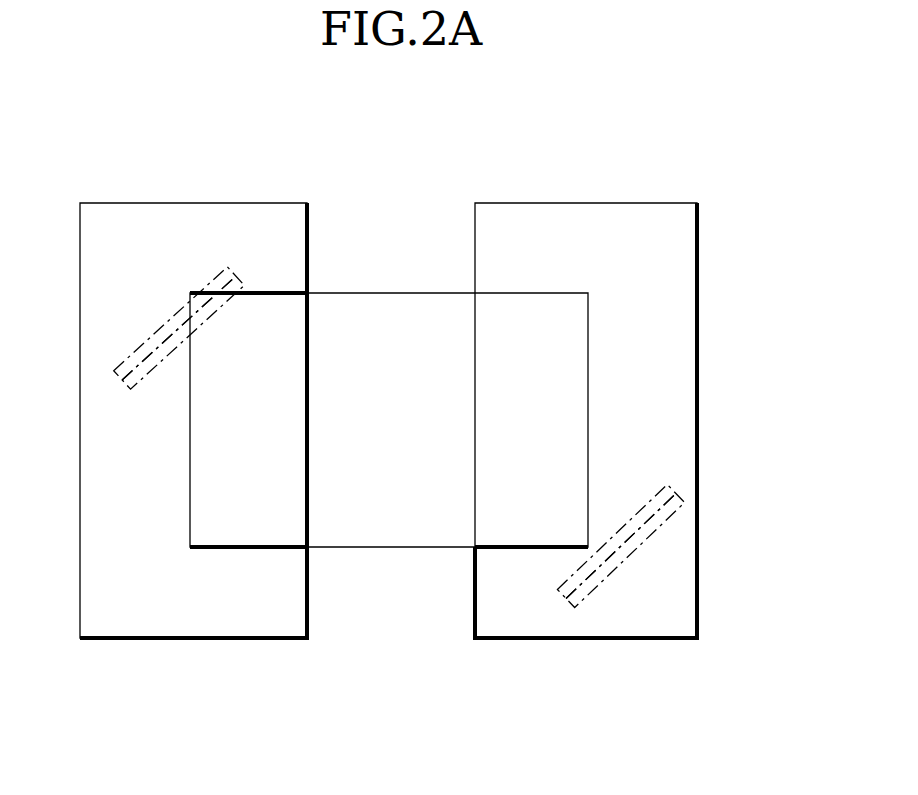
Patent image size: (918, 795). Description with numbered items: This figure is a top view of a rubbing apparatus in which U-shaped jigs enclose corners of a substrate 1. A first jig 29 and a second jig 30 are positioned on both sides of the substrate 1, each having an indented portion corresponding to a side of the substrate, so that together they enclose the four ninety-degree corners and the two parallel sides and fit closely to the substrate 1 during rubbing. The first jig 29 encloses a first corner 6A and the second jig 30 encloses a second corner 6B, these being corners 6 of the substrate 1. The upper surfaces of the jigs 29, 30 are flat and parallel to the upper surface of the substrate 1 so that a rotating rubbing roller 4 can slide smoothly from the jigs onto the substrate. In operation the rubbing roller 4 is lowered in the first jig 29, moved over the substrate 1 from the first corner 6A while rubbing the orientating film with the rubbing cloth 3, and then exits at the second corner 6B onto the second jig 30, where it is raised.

The substrate 1 is at (388, 347).
The first jig 29 is at (662, 280).
The second jig 30 is at (100, 566).
The corner 6 is at (399, 416).
The first corner 6A is at (593, 550).
The second corner 6B is at (190, 293).
The rubbing roller 4 is at (150, 335).
The rubbing cloth 3 is at (399, 437).